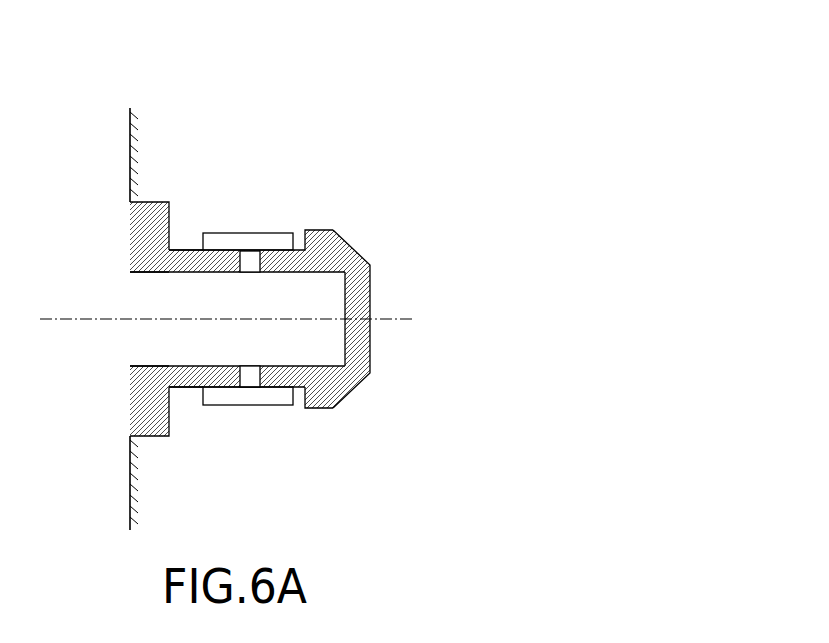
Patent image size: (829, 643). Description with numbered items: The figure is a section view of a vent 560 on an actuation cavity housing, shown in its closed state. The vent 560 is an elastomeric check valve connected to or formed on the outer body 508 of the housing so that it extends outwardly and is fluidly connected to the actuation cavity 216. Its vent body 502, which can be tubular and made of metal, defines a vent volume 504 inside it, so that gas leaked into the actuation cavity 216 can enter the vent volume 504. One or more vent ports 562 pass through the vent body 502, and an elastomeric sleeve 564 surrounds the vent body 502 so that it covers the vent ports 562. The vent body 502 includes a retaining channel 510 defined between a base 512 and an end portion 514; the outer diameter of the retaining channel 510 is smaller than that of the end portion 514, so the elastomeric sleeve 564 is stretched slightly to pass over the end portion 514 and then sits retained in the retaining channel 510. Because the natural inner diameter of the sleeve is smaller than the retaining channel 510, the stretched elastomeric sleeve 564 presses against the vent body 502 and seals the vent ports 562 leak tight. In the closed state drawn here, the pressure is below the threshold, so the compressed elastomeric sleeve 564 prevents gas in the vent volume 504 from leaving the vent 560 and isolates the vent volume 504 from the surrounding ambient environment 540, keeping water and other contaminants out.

The actuation cavity 216 is at (112, 82).
The surrounding ambient environment 540 is at (372, 33).
The vent body 502 is at (301, 320).
The vent volume 504 is at (115, 283).
The outer body 508 is at (135, 163).
The retaining channel 510 is at (183, 410).
The base 512 is at (150, 438).
The end portion 514 is at (323, 403).
The vent 560 is at (380, 257).
The vent port 562 is at (248, 275).
The elastomeric sleeve 564 is at (248, 232).